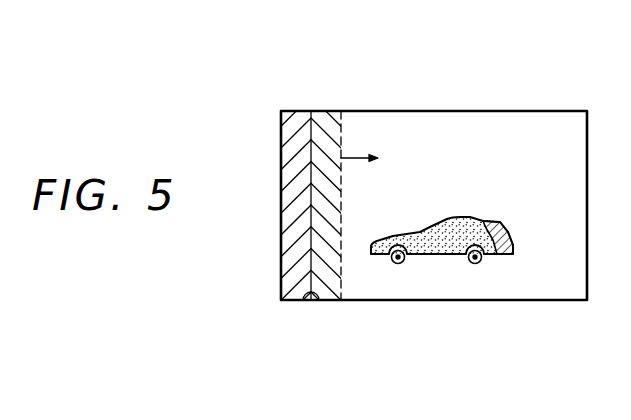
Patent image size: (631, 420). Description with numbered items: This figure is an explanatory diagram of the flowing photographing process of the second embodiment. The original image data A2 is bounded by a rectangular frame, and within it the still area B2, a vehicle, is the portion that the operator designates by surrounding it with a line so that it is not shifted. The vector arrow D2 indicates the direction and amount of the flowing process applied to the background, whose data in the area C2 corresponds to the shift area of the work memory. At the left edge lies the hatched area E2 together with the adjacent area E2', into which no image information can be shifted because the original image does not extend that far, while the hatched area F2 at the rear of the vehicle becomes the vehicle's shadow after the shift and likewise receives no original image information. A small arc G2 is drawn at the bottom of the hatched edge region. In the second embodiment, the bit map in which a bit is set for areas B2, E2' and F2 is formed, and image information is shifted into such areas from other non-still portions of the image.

The area E2 is at (287, 188).
The area E2' is at (329, 185).
The original image data A2 is at (587, 102).
The vector arrow D2 is at (355, 160).
The still area B2 is at (443, 249).
The area F2 is at (514, 240).
The bottom junction arc G2 is at (320, 296).
The area C2 is at (535, 282).